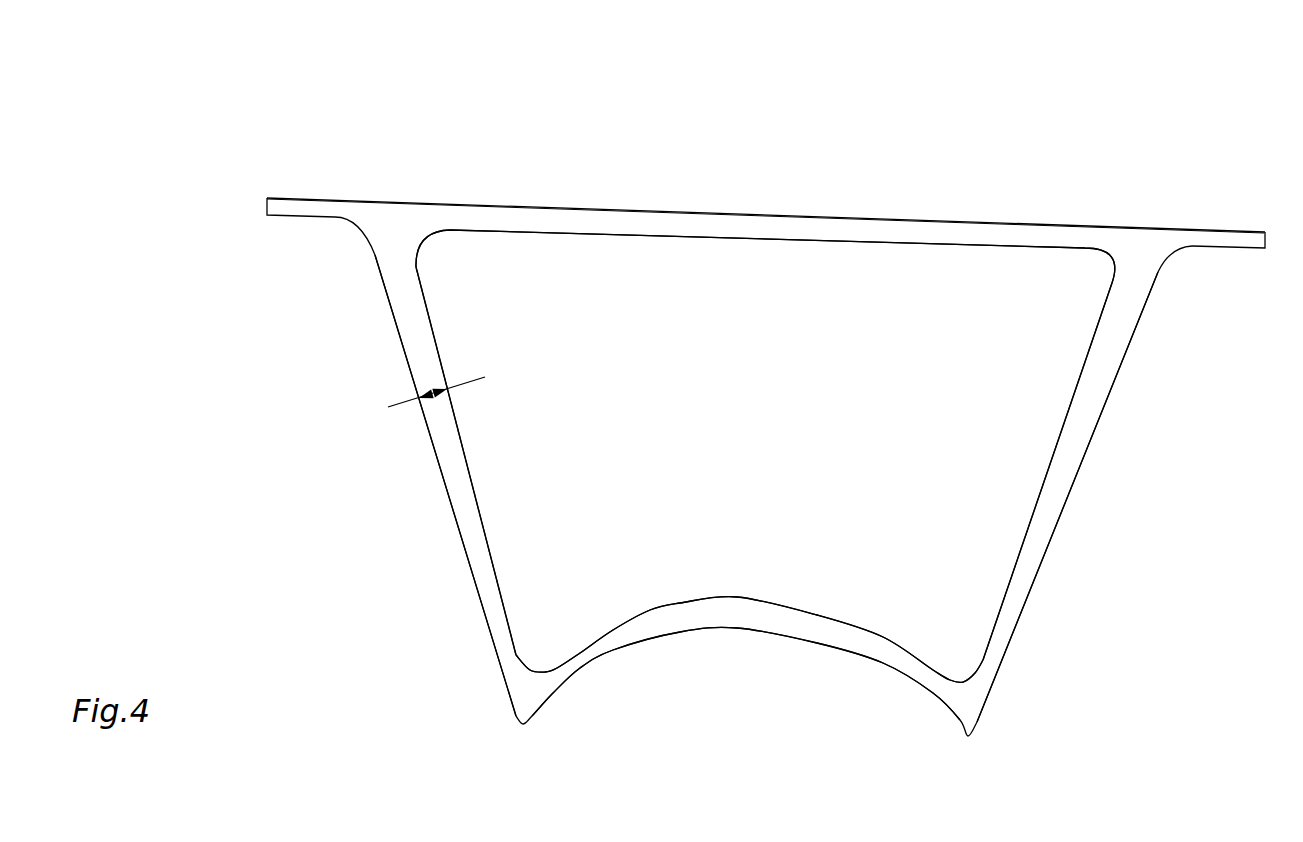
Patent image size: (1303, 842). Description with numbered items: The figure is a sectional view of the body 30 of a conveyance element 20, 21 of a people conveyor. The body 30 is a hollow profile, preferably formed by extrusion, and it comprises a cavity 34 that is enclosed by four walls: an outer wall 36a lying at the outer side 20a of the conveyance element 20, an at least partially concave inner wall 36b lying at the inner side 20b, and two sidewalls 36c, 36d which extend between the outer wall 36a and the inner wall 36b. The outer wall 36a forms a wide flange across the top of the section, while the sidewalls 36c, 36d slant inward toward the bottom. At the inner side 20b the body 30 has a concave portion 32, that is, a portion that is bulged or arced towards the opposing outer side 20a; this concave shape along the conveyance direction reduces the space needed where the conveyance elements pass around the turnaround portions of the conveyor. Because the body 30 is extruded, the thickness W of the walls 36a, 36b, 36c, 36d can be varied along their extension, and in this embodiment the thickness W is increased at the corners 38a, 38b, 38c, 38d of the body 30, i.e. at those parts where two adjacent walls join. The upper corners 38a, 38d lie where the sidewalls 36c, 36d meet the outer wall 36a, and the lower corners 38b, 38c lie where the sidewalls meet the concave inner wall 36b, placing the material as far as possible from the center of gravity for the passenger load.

The conveyance element 20 is at (1100, 97).
The hollow profile 21 is at (766, 488).
The outer side 20a is at (914, 192).
The inner side 20b is at (817, 710).
The body 30 is at (255, 160).
The concave portion 32 is at (725, 655).
The cavity 34 is at (765, 433).
The outer wall 36a is at (946, 233).
The inner wall 36b is at (848, 620).
The sidewall 36c is at (462, 465).
The sidewall 36d is at (1063, 495).
The corner 38a is at (364, 268).
The corner 38b is at (500, 727).
The corner 38c is at (988, 732).
The corner 38d is at (1173, 268).
The thickness of the walls W is at (439, 378).